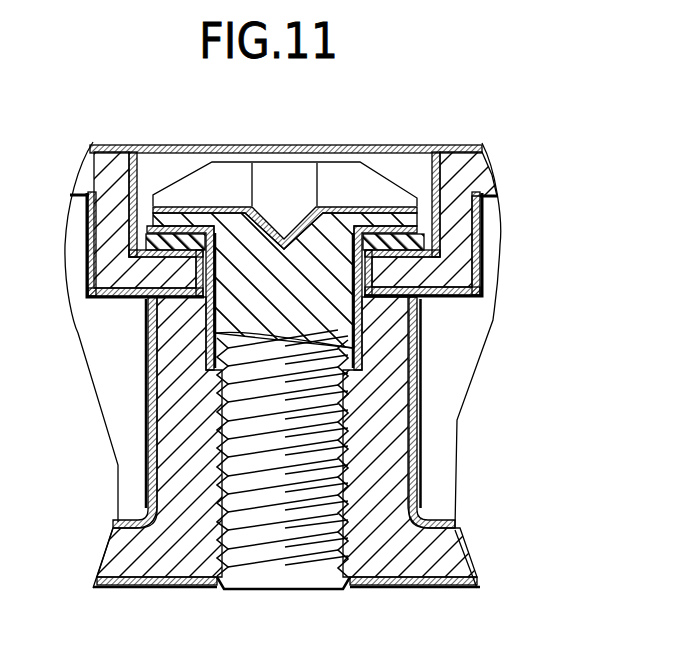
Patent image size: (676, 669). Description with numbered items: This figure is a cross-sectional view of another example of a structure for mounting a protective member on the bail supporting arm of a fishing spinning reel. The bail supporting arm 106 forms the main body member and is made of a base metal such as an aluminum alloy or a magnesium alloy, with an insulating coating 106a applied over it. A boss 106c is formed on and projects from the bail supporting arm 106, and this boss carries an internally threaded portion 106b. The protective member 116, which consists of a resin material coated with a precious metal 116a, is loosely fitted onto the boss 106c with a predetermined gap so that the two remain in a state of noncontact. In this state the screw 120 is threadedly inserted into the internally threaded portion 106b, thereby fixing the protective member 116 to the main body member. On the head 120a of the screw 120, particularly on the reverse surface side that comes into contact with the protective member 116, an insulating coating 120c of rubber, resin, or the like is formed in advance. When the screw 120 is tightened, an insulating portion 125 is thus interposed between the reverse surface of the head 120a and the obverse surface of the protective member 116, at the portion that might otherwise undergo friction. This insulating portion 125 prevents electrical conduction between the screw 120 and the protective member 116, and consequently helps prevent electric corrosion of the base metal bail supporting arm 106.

The bail supporting arm 106 is at (163, 582).
The insulating coating 106a is at (118, 522).
The internally threaded portion 106b is at (333, 512).
The boss 106c is at (410, 416).
The protective member 116 is at (472, 242).
The precious metal 116a is at (481, 146).
The screw 120 is at (250, 572).
The head 120a is at (358, 172).
The insulating coating 120c is at (272, 224).
The insulating portion 125 is at (192, 212).